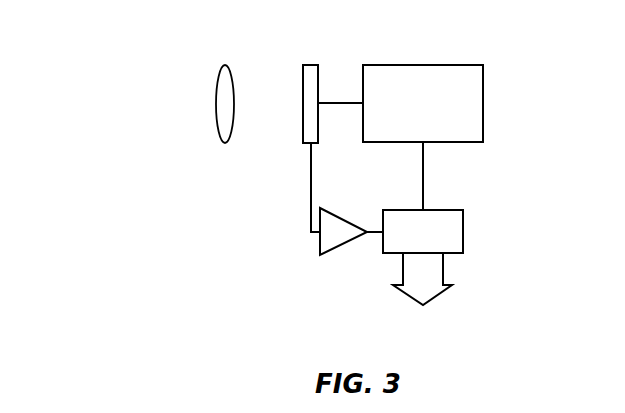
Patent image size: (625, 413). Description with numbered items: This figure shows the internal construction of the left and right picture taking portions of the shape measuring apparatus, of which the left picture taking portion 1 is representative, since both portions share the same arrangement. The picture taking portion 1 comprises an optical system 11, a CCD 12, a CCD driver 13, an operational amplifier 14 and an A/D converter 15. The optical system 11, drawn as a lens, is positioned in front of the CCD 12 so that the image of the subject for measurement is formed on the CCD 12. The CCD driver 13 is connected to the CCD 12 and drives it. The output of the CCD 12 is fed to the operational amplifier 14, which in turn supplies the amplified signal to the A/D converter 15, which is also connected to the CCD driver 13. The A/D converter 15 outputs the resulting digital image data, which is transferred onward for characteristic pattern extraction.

The left picture taking portion 1 is at (150, 30).
The optical system 11 is at (225, 65).
The CCD 12 is at (311, 65).
The CCD driver 13 is at (377, 65).
The operational amplifier 14 is at (320, 248).
The A/D converter 15 is at (463, 232).